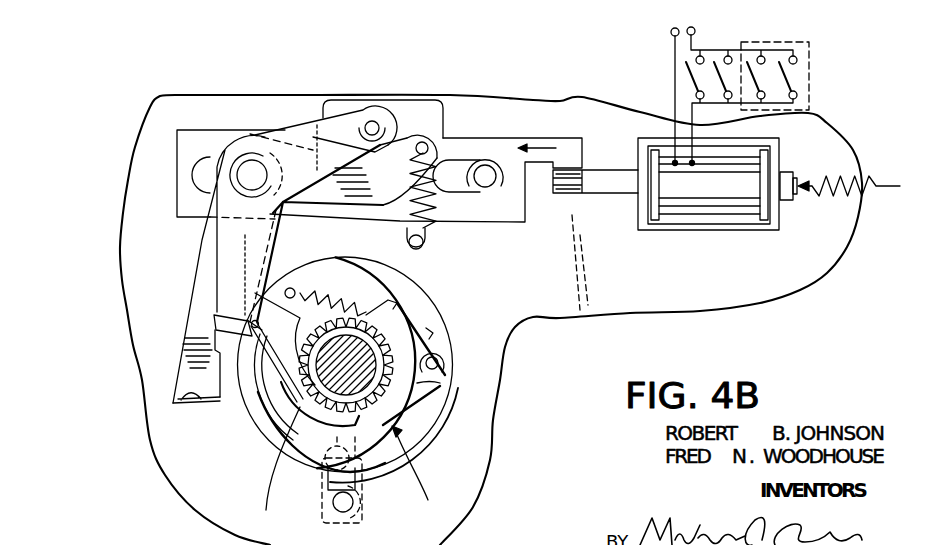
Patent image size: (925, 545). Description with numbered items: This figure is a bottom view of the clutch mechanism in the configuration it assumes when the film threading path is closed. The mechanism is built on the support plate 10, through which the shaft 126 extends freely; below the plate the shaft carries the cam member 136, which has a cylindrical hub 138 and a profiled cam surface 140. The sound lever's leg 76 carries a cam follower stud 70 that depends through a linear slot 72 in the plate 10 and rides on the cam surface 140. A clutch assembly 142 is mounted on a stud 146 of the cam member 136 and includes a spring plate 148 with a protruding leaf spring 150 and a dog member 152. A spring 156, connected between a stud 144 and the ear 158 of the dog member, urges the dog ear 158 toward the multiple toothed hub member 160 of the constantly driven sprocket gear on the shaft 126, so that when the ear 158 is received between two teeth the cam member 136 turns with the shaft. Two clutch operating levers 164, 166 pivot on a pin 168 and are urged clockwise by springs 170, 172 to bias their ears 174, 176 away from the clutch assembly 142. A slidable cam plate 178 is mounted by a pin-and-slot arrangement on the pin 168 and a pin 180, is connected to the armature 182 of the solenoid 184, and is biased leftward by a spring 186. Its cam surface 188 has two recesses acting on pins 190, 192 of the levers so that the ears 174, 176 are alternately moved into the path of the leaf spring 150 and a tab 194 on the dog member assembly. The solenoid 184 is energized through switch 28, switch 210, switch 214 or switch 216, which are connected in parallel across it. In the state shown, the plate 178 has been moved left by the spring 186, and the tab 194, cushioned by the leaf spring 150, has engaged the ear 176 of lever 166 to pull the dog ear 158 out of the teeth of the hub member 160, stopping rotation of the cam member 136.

The plate 10 is at (474, 456).
The switch 28 is at (688, 76).
The cam follower stud 70 is at (350, 511).
The linear slot 72 is at (322, 480).
The leg 76 is at (362, 503).
The shaft 126 is at (286, 423).
The cam member 136 is at (456, 395).
The cylindrical hub 138 is at (289, 455).
The profiled cam surface 140 is at (448, 452).
The clutch assembly 142 is at (422, 471).
The stud 144 is at (318, 260).
The stud 146 is at (437, 360).
The spring plate 148 is at (280, 469).
The leaf spring 150 is at (290, 433).
The dog member 152 is at (440, 383).
The spring 156 is at (377, 307).
The ear 158 is at (400, 305).
The hub member 160 is at (290, 397).
The clutch operating lever 164 is at (198, 264).
The clutch operating lever 166 is at (228, 238).
The pin 168 is at (252, 172).
The spring 170 is at (428, 200).
The spring 172 is at (395, 207).
The ear 174 is at (185, 392).
The ear 176 is at (232, 311).
The slidable cam plate 178 is at (465, 145).
The pin 180 is at (486, 170).
The armature 182 is at (600, 185).
The solenoid 184 is at (755, 165).
The spring 186 is at (864, 182).
The cam surface 188 is at (400, 132).
The pin 190 is at (422, 142).
The pin 192 is at (368, 121).
The tab 194 is at (252, 323).
The normally open switch 210 is at (723, 55).
The switch 214 is at (765, 78).
The switch 216 is at (797, 75).